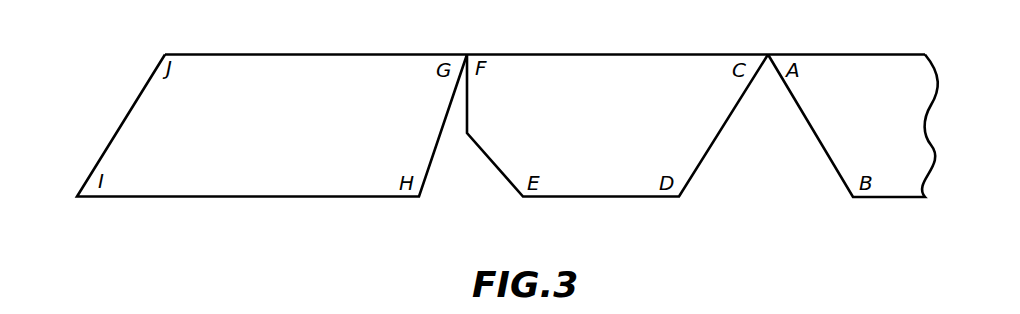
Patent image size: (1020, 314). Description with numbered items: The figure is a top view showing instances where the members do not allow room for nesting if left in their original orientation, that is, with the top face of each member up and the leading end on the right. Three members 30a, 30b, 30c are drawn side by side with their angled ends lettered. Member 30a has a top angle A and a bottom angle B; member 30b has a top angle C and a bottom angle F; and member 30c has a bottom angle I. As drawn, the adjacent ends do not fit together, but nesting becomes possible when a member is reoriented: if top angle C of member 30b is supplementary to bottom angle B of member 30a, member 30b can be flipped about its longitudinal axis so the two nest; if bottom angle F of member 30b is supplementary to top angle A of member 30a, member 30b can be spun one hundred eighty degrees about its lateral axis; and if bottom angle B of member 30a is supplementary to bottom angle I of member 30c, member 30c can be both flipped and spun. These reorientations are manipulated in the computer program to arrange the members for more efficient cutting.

The member 30a is at (905, 130).
The member 30b is at (626, 128).
The member 30c is at (313, 128).